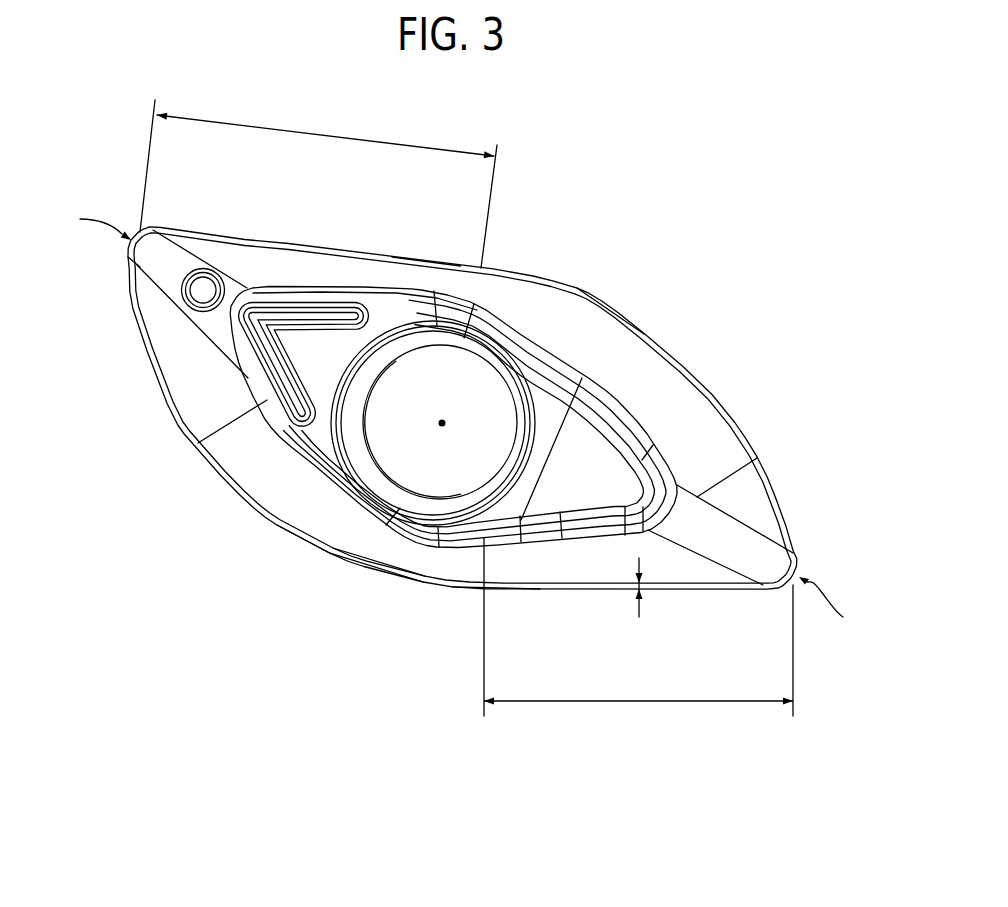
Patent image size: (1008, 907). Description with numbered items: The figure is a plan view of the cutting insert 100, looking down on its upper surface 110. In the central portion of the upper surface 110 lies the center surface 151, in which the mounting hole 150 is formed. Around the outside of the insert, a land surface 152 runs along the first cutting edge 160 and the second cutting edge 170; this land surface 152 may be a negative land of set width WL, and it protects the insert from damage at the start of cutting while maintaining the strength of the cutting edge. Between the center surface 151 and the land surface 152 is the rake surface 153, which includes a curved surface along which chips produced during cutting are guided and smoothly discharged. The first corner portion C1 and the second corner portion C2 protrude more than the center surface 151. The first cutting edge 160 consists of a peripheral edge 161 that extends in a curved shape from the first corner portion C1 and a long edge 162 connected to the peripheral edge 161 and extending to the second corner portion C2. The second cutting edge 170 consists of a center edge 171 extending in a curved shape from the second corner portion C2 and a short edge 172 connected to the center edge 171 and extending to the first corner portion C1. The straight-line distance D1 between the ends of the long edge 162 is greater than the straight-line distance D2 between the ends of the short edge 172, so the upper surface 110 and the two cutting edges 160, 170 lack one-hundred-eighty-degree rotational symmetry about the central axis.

The cutting insert 100 is at (722, 222).
The upper surface 110 is at (249, 466).
The mounting hole 150 is at (384, 454).
The center surface 151 is at (565, 490).
The land surface 152 is at (698, 585).
The rake surface 153 is at (647, 377).
The first cutting edge 160 is at (410, 667).
The peripheral edge 161 is at (325, 553).
The long edge 162 is at (522, 590).
The second cutting edge 170 is at (610, 167).
The center edge 171 is at (621, 313).
The short edge 172 is at (398, 259).
The first corner portion C1 is at (89, 216).
The second corner portion C2 is at (836, 605).
The straight-line distance between both ends of the long edge D1 is at (638, 635).
The straight-line distance between both ends of the short edge D2 is at (318, 184).
The width of the land surface WL is at (639, 602).